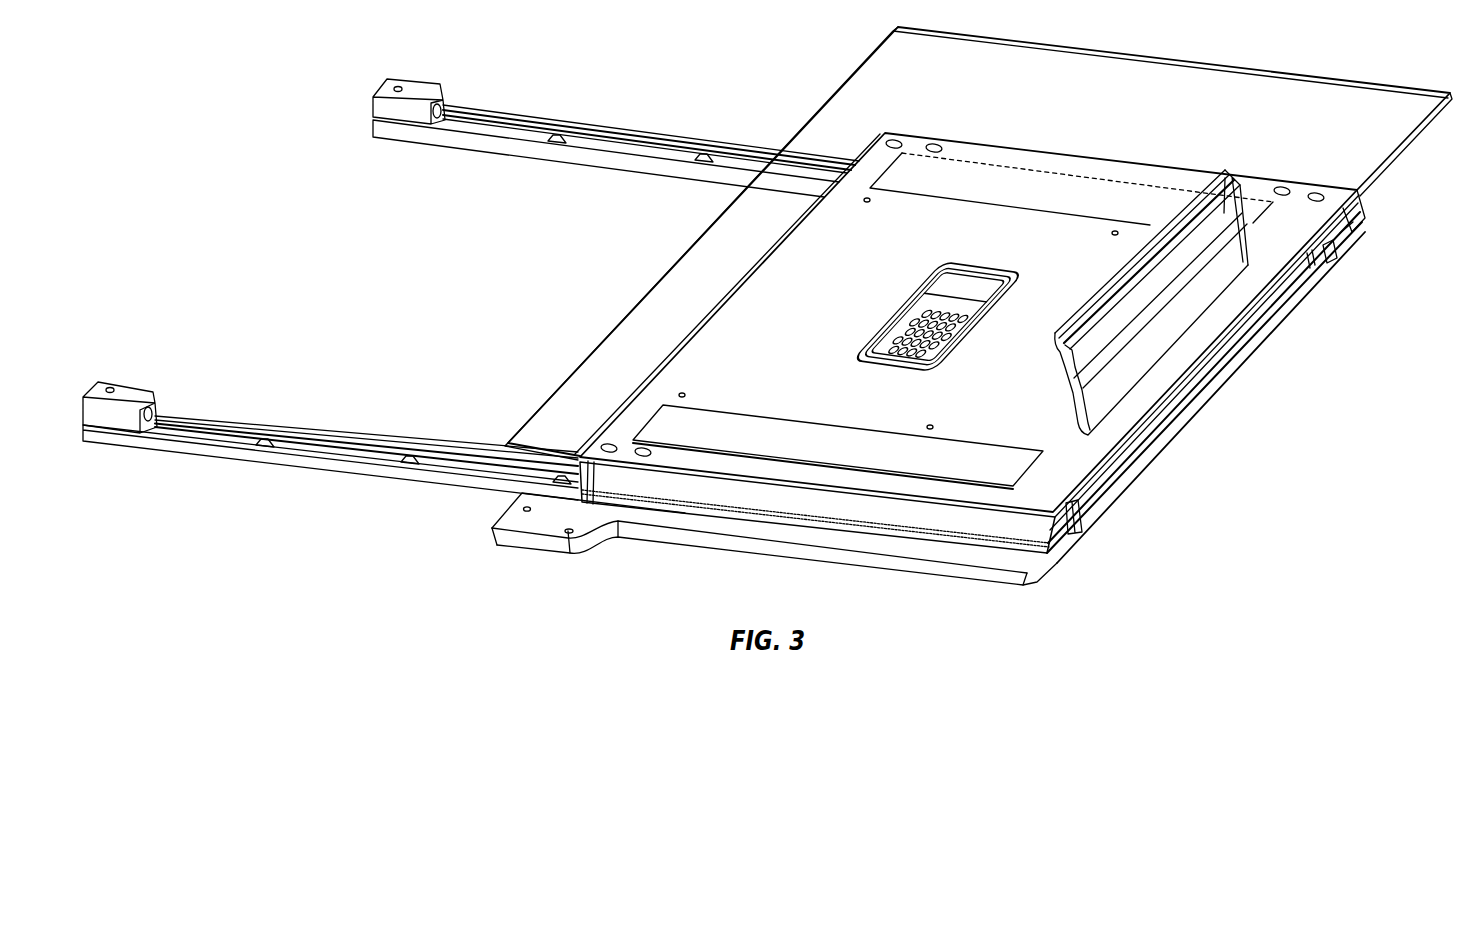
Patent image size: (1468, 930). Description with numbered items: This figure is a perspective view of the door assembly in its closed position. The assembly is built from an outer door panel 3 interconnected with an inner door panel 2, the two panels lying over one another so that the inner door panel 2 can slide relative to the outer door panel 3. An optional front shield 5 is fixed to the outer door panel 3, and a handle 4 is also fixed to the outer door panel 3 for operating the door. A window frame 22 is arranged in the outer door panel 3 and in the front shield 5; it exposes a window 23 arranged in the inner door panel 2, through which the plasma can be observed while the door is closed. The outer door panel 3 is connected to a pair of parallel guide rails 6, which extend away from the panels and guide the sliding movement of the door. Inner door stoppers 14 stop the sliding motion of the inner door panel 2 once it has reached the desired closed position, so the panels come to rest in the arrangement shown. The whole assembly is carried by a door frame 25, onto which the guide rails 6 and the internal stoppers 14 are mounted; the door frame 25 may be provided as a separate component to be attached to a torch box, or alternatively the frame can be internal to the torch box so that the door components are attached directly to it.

The inner door panel 2 is at (1140, 455).
The outer door panel 3 is at (1356, 218).
The handle 4 is at (1228, 170).
The front shield 5 is at (1045, 62).
The guide rails 6 is at (490, 130).
The inner door stoppers 14 is at (1322, 265).
The window frame 22 is at (924, 338).
The window 23 is at (878, 347).
The door frame 25 is at (542, 542).